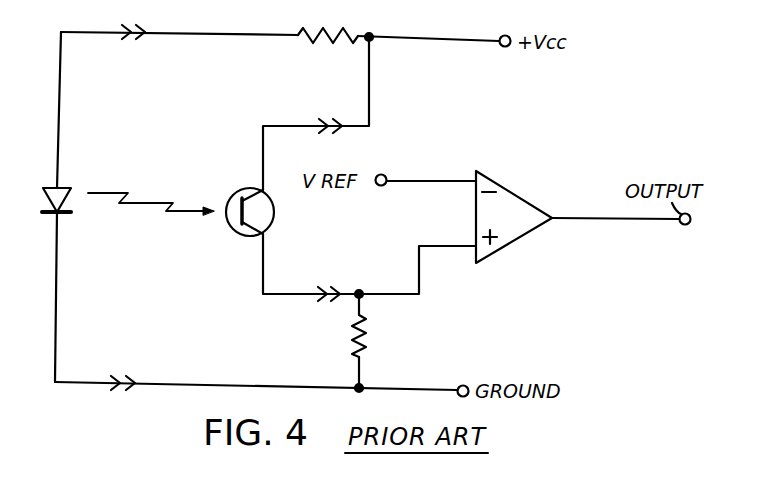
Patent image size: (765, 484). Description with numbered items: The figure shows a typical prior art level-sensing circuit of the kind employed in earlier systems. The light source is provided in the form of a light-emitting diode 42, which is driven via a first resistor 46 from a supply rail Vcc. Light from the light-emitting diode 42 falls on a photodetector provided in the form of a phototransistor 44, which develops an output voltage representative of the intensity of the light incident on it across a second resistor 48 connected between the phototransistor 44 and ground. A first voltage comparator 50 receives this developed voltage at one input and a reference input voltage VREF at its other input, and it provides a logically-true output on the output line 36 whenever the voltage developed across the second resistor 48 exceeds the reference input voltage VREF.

The output line 36 is at (634, 222).
The light-emitting diode 42 is at (48, 198).
The phototransistor 44 is at (233, 230).
The first resistor 46 is at (318, 30).
The second resistor 48 is at (364, 350).
The first voltage comparator 50 is at (510, 198).